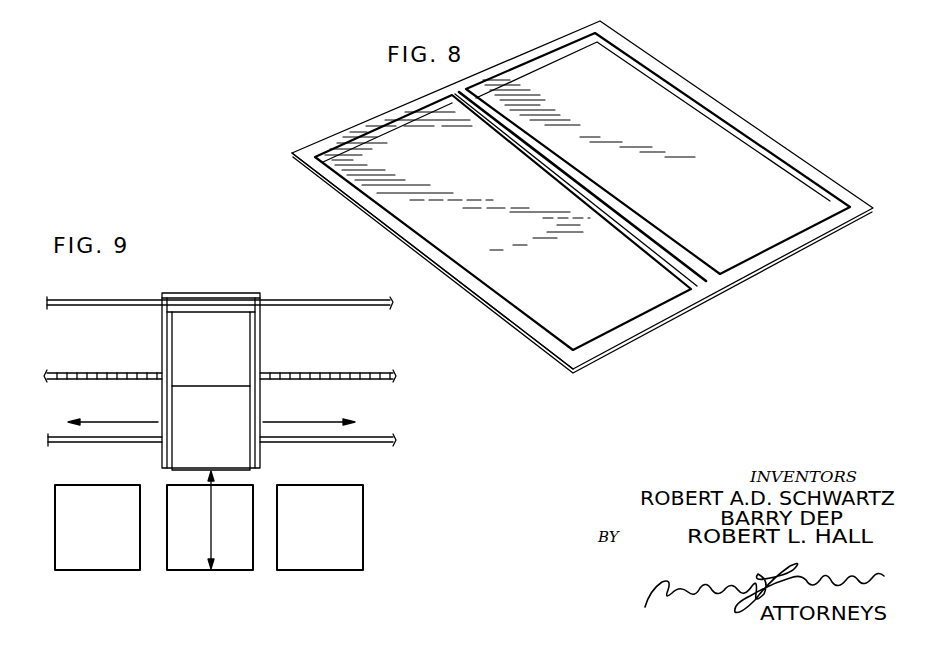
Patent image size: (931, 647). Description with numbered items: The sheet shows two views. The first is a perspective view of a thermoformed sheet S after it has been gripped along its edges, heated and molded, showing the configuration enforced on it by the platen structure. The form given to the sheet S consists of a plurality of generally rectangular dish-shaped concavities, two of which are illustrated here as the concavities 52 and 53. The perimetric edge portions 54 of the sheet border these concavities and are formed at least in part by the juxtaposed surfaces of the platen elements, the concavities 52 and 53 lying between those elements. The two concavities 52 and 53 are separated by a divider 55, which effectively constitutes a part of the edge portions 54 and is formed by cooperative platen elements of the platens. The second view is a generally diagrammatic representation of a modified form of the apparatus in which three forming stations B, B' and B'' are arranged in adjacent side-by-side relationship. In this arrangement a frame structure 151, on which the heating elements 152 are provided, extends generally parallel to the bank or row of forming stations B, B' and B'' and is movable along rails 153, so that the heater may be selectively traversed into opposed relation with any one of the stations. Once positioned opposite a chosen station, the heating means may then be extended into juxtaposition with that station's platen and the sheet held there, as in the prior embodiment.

In FIG. 8, the sheet S is at (675, 72).
In FIG. 8, the concavity 52 is at (385, 148).
In FIG. 8, the concavity 53 is at (705, 135).
In FIG. 8, the perimetric edge portions 54 is at (365, 204).
In FIG. 8, the divider 55 is at (533, 139).
In FIG. 9, the frame structure 151 is at (162, 350).
In FIG. 9, the heating elements 152 is at (229, 441).
In FIG. 9, the rails 153 is at (103, 300).
In FIG. 9, the forming station B is at (97, 543).
In FIG. 9, the forming station B' is at (210, 543).
In FIG. 9, the forming station B'' is at (320, 543).